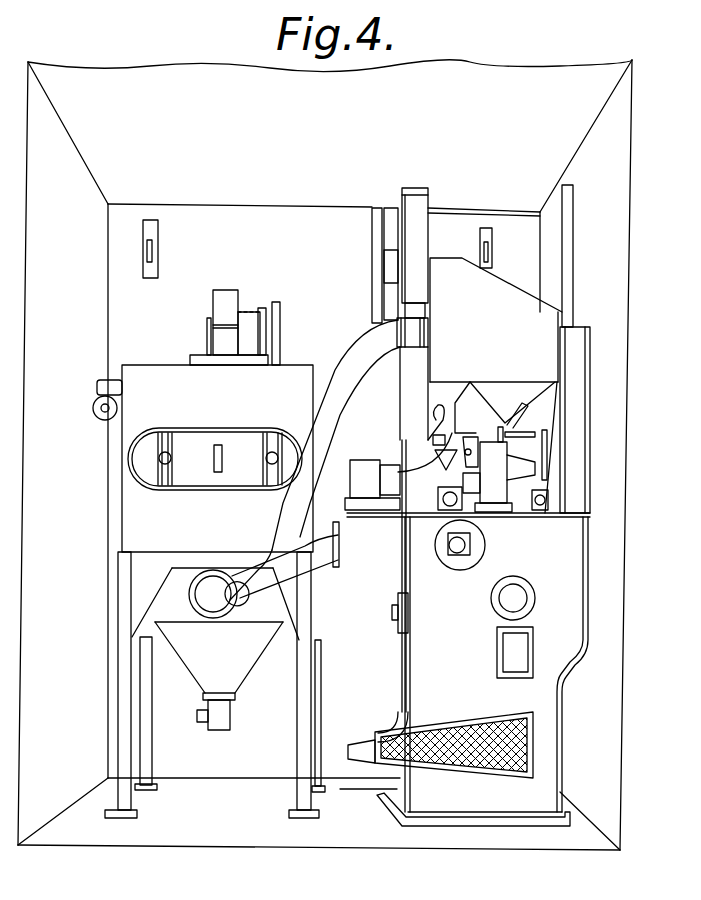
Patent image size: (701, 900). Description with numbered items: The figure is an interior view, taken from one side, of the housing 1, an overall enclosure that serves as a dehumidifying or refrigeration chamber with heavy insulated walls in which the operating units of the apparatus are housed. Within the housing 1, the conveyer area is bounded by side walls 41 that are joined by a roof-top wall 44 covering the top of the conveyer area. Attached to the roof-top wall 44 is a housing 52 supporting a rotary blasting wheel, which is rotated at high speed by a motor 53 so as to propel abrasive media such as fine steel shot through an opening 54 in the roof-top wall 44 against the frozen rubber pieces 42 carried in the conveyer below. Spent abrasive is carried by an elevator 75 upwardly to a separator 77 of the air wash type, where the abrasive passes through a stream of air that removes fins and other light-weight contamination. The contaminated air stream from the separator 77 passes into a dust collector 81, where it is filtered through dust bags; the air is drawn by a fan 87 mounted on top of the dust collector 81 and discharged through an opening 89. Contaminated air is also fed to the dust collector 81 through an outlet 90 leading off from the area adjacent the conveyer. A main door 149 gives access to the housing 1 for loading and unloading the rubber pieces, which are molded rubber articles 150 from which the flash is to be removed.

The housing 1 is at (632, 218).
The rubber pieces 42 is at (568, 240).
The elevator 75 is at (420, 392).
The separator 77 is at (492, 326).
The opening 54 is at (521, 393).
The housing 52 is at (490, 444).
The molded rubber article 150 is at (334, 480).
The motor 53 is at (360, 492).
The roof-top wall 44 is at (521, 517).
The side walls 41 is at (562, 568).
The outlet 90 is at (300, 570).
The main door 149 is at (368, 684).
The dust collector 81 is at (280, 418).
The fan 87 is at (225, 293).
The opening 89 is at (207, 339).